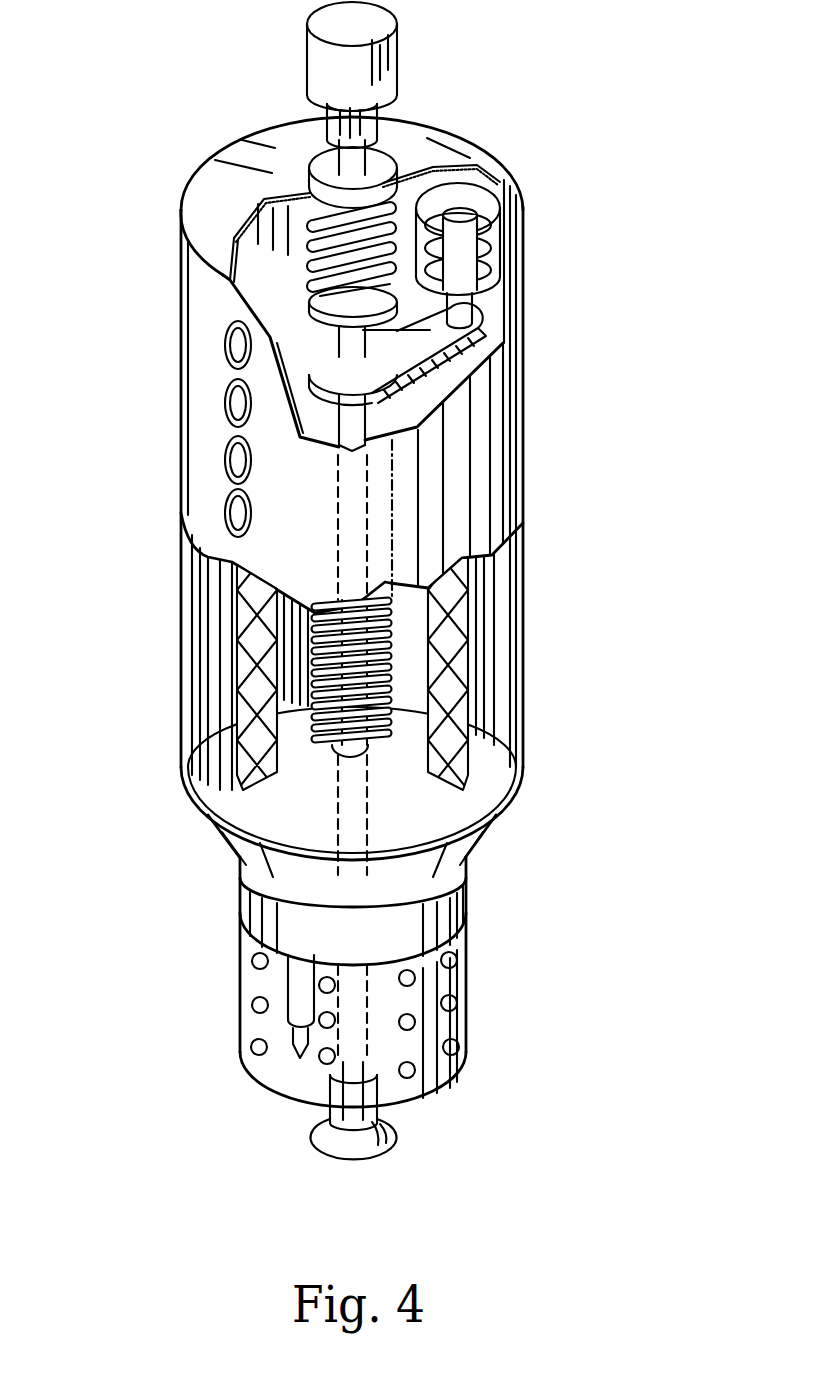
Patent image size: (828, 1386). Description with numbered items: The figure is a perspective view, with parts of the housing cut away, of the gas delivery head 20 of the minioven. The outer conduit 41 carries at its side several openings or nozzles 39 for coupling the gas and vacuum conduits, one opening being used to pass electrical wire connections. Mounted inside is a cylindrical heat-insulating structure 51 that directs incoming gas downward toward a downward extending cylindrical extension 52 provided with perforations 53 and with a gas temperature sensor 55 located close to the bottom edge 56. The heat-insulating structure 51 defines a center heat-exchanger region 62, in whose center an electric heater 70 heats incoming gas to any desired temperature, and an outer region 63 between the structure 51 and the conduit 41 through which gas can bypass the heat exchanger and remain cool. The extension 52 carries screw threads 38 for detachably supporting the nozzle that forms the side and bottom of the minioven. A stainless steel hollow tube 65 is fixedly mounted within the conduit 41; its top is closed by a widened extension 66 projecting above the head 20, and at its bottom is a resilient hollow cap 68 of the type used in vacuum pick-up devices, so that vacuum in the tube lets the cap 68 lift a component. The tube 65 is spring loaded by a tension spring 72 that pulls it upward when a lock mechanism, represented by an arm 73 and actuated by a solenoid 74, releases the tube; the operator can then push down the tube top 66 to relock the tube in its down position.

The gas delivery head 20 is at (590, 170).
The widened extension 66 is at (383, 64).
The tension spring 72 is at (313, 240).
The solenoid 74 is at (525, 253).
The arm 73 is at (417, 353).
The stainless steel hollow tube 65 is at (357, 428).
The conduit 41 is at (495, 488).
The openings or nozzles 39 is at (238, 407).
The outer region 63 is at (210, 616).
The center heat-exchanger region 62 is at (297, 655).
The cylindrical heat-insulating structure 51 is at (470, 652).
The electric heater 70 is at (390, 720).
The screw threads 38 is at (462, 902).
The cylindrical extension 52 is at (457, 988).
The perforations 53 is at (262, 1044).
The gas temperature sensor 55 is at (297, 1045).
The bottom edge 56 is at (428, 1090).
The resilient hollow cap 68 is at (380, 1148).